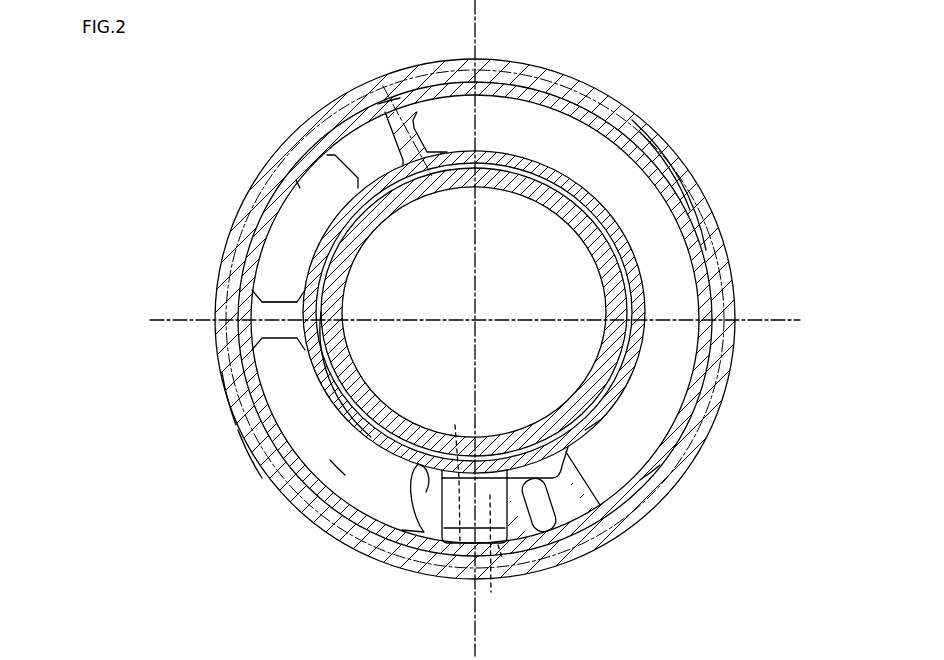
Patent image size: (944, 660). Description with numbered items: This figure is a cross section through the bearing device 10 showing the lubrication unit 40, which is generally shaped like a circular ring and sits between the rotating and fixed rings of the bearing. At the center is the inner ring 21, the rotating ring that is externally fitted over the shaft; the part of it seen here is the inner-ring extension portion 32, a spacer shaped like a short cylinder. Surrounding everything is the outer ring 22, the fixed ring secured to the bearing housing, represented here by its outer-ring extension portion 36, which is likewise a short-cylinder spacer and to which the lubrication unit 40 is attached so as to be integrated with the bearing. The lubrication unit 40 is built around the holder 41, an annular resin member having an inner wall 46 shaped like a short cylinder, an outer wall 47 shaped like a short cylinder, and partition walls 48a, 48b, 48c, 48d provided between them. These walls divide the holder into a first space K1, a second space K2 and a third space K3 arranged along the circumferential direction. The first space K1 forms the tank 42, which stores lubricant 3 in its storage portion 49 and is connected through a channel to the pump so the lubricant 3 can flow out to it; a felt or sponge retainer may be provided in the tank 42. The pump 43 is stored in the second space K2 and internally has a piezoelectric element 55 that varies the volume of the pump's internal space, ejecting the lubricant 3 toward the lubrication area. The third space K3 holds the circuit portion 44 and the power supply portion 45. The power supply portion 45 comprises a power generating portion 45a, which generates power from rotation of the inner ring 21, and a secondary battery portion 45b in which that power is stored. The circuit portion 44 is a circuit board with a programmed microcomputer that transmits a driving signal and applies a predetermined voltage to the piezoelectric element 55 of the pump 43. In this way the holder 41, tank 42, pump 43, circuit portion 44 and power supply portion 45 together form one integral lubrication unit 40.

The housing 10 is at (638, 107).
The lubrication unit 40 is at (540, 82).
The holder 41 is at (390, 100).
The partition wall 48b is at (417, 112).
The storage portion 49 is at (668, 172).
The lubricant 3 is at (655, 178).
The tank 42 is at (658, 232).
The first space K1 is at (475, 319).
The power generating portion 45a is at (308, 207).
The power supply portion 45 is at (278, 240).
The secondary battery portion 45b is at (270, 280).
The third space K3 is at (263, 327).
The outer-ring extension portion 36 is at (237, 401).
The outer ring 22 is at (248, 452).
The inner-ring extension portion 32 is at (379, 400).
The inner ring 21 is at (388, 411).
The partition wall 48c is at (418, 485).
The partition wall 48d is at (527, 473).
The outer wall 47 is at (590, 437).
The inner wall 46 is at (655, 470).
The partition wall 48a is at (555, 492).
The circuit portion 44 is at (332, 460).
The pump 43 is at (440, 540).
The piezoelectric element 55 is at (494, 556).
The second space K2 is at (505, 545).